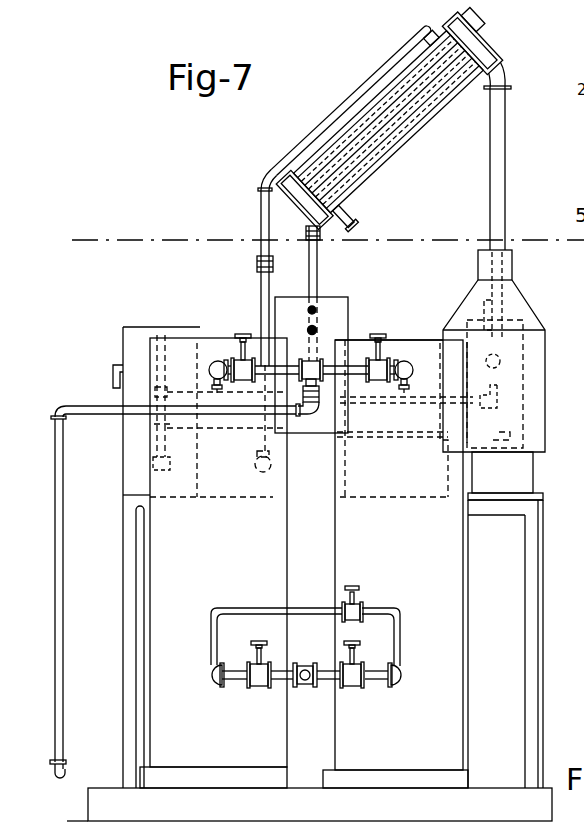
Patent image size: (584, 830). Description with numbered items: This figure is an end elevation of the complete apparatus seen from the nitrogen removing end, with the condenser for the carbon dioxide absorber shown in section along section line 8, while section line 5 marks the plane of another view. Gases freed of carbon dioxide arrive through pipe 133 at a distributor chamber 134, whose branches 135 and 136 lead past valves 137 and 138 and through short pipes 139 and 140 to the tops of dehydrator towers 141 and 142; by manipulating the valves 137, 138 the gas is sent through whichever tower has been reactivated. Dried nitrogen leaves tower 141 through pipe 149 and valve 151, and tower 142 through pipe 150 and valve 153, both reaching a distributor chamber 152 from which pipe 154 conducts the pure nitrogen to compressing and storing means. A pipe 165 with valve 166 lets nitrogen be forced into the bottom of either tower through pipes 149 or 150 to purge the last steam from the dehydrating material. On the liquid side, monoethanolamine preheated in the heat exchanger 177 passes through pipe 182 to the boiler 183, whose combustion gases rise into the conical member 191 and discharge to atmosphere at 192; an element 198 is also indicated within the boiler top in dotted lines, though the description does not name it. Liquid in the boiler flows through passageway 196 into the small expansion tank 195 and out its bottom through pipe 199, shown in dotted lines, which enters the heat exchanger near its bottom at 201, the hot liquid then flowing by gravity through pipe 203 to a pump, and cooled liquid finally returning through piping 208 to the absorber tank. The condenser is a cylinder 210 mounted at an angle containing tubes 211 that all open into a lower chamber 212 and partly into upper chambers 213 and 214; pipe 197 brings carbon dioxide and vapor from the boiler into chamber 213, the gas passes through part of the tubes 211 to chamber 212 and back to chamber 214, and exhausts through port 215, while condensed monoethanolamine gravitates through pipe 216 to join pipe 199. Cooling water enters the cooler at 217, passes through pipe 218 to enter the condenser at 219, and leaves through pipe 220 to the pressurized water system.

The section line 5- 5 is at (80, 258).
The section line 8- 8 is at (356, 106).
The pipe 133 is at (238, 414).
The distributor chamber 134 is at (323, 378).
The branch 135 is at (298, 362).
The branch 136 is at (347, 362).
The valve 137 is at (233, 355).
The valve 138 is at (382, 357).
The short pipe 139 is at (217, 360).
The short pipe 140 is at (404, 366).
The dehydrator tower 141 is at (167, 560).
The dehydrator tower 142 is at (340, 548).
The pipe 149 is at (208, 672).
The pipe 150 is at (408, 675).
The valve 151 is at (257, 683).
The distributor chamber 152 is at (306, 665).
The valve 153 is at (355, 666).
The pipe 154 is at (306, 684).
The pipe 165 is at (303, 602).
The valve 166 is at (362, 601).
The heat exchanger 177 is at (123, 439).
The pipe 182 is at (158, 358).
The boiler 183 is at (533, 463).
The conical member 191 is at (513, 285).
The discharge to atmosphere 192 is at (503, 248).
The expansion tank 195 is at (498, 385).
The passageway 196 is at (500, 360).
The pipe 197 is at (505, 131).
The inlet pipe 198 is at (500, 305).
The pipe 199 is at (417, 403).
The entry point 201 is at (153, 466).
The pipe 203 is at (113, 382).
The piping 208 is at (314, 309).
The cylinder 210 is at (383, 160).
The tubes 211 is at (340, 178).
The chamber 212 is at (301, 207).
The chamber 213 is at (481, 50).
The chamber 214 is at (448, 24).
The port 215 is at (468, 18).
The pipe 216 is at (318, 263).
The water inlet point 217 is at (315, 329).
The pipe 218 is at (261, 212).
The entry point 219 is at (428, 44).
The pipe 220 is at (358, 224).